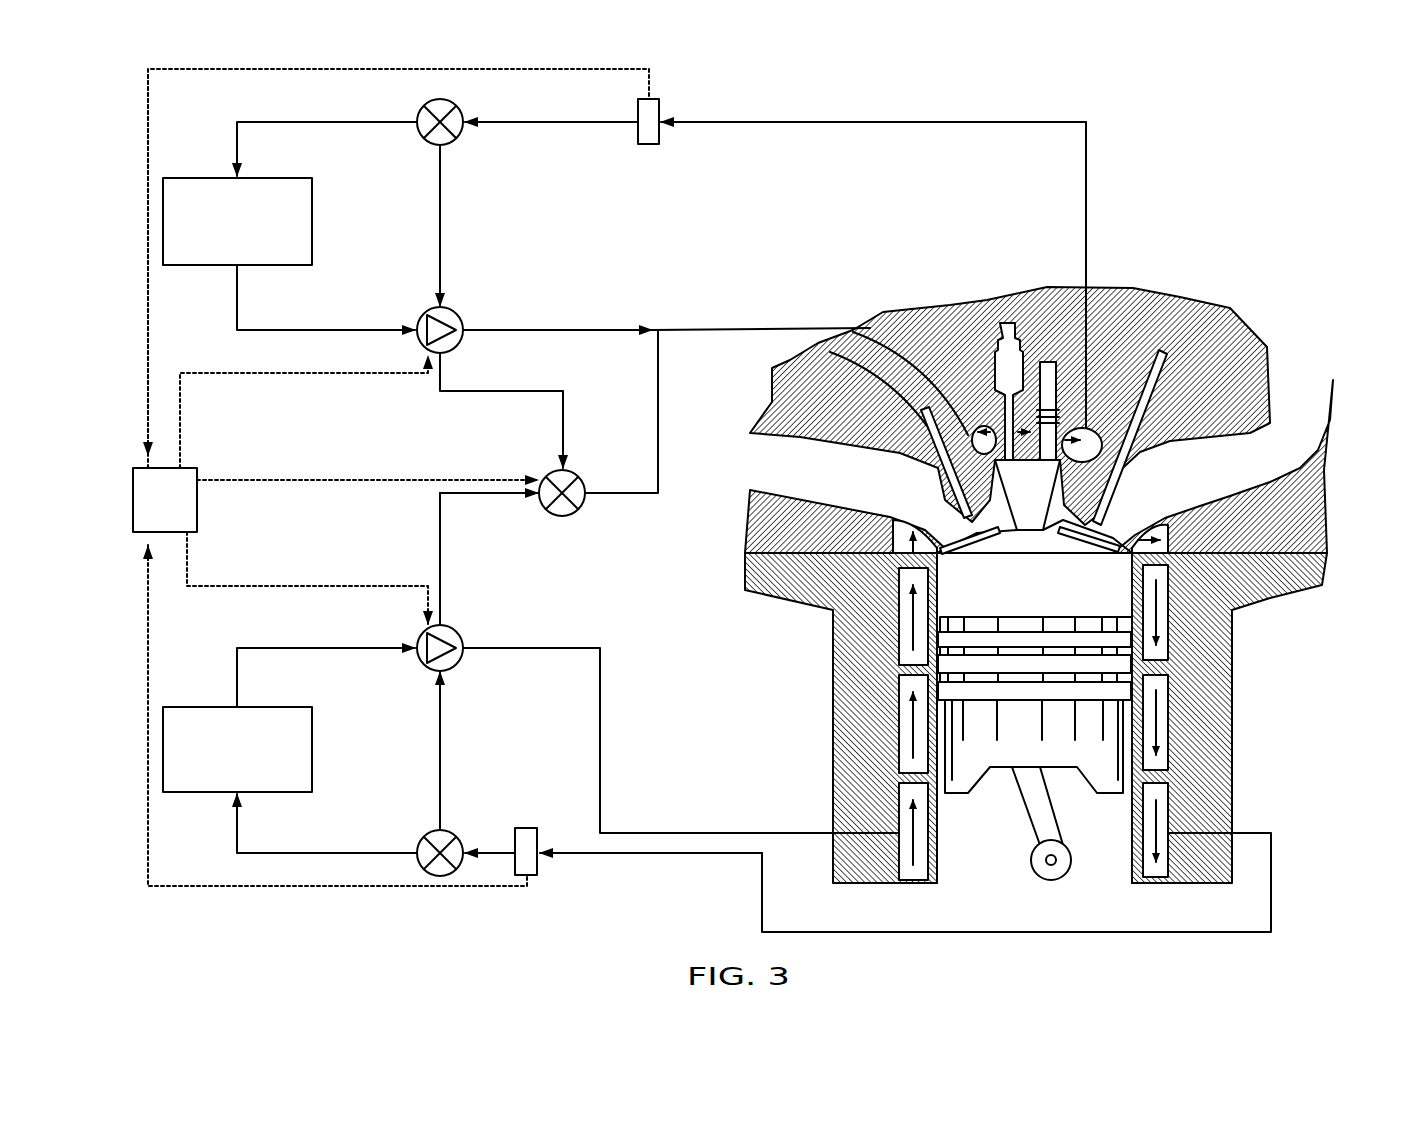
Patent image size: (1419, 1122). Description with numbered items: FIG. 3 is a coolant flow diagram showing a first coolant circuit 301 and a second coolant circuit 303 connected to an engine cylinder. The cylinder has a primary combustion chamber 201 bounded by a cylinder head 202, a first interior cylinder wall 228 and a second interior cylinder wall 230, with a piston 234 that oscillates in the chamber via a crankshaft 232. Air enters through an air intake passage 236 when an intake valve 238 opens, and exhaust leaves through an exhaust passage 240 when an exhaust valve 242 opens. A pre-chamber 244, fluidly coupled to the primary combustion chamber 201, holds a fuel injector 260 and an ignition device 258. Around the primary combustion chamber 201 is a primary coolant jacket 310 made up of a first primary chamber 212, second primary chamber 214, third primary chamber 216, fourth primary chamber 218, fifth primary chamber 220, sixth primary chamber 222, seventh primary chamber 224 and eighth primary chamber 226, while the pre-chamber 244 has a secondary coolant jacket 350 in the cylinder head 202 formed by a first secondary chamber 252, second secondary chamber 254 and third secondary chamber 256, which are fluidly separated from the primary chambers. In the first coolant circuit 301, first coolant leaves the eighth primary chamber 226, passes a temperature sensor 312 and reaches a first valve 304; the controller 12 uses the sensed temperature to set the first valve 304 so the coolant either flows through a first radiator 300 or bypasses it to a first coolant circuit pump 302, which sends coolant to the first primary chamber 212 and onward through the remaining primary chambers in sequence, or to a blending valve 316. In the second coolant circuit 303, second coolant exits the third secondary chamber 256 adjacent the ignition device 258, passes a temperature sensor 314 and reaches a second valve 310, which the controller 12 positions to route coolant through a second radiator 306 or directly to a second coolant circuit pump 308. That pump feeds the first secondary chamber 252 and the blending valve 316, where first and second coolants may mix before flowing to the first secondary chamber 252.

The controller 12 is at (153, 513).
The primary combustion chamber 201 is at (1055, 595).
The cylinder head 202 is at (762, 413).
The first primary chamber 212 is at (893, 882).
The second primary chamber 214 is at (899, 752).
The third primary chamber 216 is at (899, 660).
The fourth primary chamber 218 is at (891, 515).
The fifth primary chamber 220 is at (1177, 528).
The sixth primary chamber 222 is at (1172, 655).
The seventh primary chamber 224 is at (1172, 750).
The eighth primary chamber 226 is at (1186, 883).
The first interior cylinder wall 228 is at (937, 857).
The second interior cylinder wall 230 is at (1130, 857).
The crankshaft 232 is at (1036, 875).
The piston 234 is at (1008, 767).
The air intake passage 236 is at (1240, 482).
The intake valve 238 is at (1105, 487).
The exhaust passage 240 is at (861, 482).
The exhaust valve 242 is at (957, 496).
The pre-chamber 244 is at (1045, 494).
The first secondary chamber 252 is at (818, 342).
The second secondary chamber 254 is at (1036, 360).
The third secondary chamber 256 is at (1172, 305).
The ignition device 258 is at (1063, 362).
The fuel injector 260 is at (996, 335).
The first radiator 300 is at (220, 761).
The first coolant circuit 301 is at (275, 915).
The first coolant circuit pump 302 is at (458, 627).
The second coolant circuit 303 is at (778, 99).
The first valve 304 is at (455, 833).
The second radiator 306 is at (220, 233).
The second coolant circuit pump 308 is at (458, 310).
The second valve 310 is at (458, 108).
The temperature sensor 312 is at (539, 838).
The temperature sensor 314 is at (662, 112).
The blending valve 316 is at (549, 472).
The secondary coolant jacket 350 is at (1132, 284).